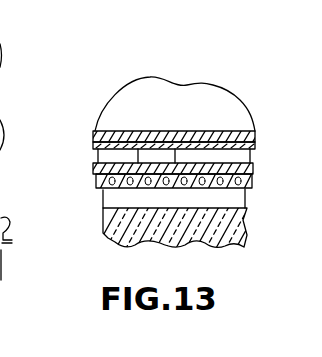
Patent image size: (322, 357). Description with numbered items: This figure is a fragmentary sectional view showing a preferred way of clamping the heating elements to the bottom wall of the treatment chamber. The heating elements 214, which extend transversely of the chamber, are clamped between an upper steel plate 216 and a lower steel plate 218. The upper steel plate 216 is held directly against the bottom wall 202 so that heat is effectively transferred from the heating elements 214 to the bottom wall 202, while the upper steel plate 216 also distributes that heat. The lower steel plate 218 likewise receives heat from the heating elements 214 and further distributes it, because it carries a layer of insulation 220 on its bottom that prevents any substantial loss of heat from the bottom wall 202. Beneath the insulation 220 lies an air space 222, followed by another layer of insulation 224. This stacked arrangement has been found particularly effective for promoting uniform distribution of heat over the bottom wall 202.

The bottom wall 202 is at (94, 131).
The heating elements 214 is at (157, 157).
The upper steel plate 216 is at (93, 143).
The lower steel plate 218 is at (96, 167).
The layer of insulation 220 is at (117, 189).
The air space 222 is at (138, 198).
The layer of insulation 224 is at (203, 238).